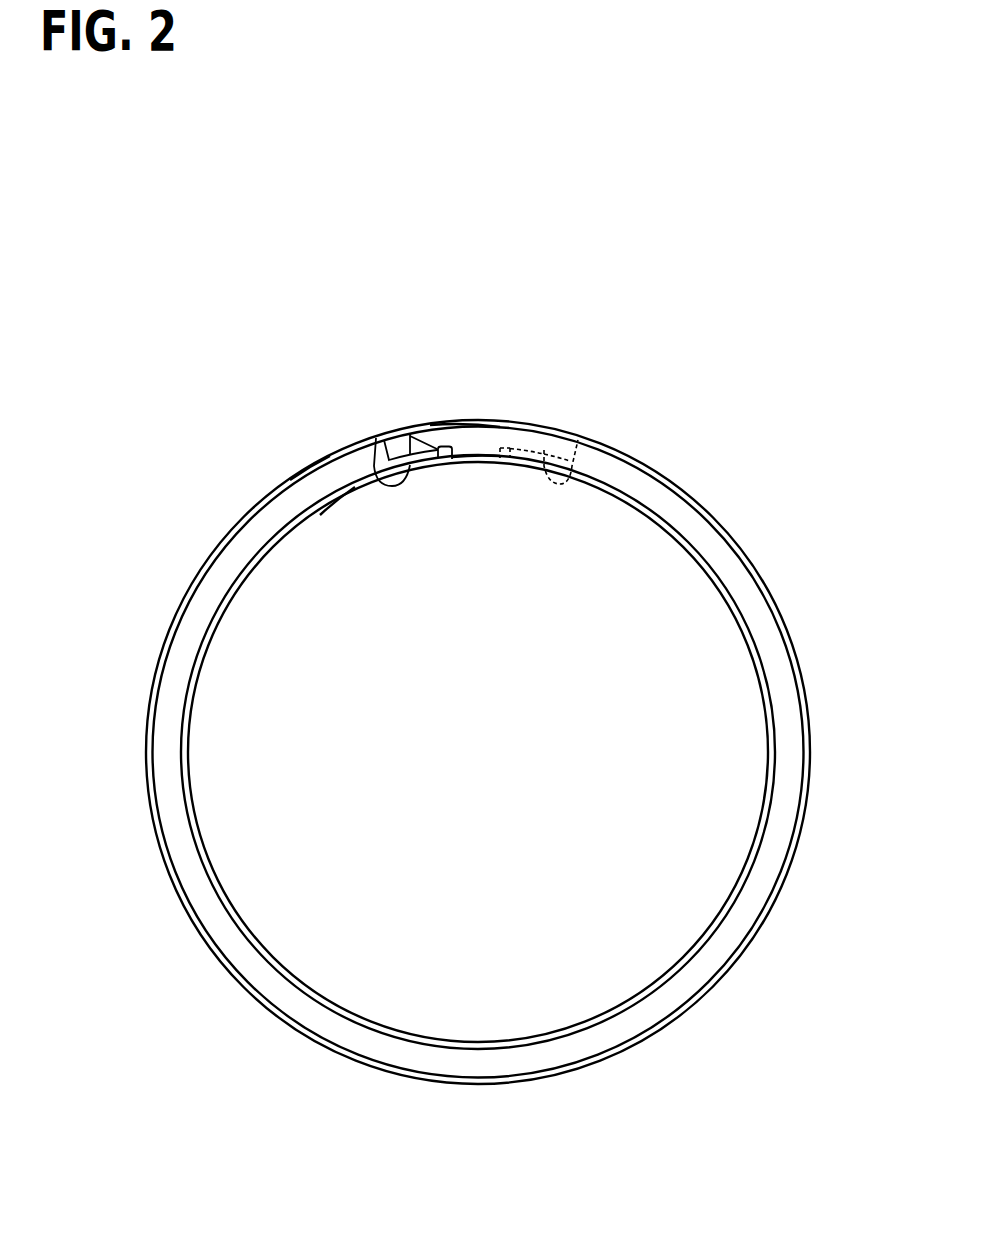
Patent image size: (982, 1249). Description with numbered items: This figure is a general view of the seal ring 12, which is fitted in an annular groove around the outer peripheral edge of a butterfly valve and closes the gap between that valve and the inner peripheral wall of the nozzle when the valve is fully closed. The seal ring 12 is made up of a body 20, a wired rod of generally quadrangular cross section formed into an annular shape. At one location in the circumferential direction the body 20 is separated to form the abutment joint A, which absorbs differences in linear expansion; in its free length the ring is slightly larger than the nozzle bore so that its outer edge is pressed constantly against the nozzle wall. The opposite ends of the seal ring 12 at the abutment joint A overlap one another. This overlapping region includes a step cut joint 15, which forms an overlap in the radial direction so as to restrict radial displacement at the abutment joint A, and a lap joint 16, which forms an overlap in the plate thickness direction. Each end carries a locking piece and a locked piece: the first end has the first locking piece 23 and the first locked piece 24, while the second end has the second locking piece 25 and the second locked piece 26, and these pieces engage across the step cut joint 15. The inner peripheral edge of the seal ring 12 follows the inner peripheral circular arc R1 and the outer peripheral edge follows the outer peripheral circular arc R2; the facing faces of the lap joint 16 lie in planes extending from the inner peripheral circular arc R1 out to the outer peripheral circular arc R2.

The seal ring 12 is at (787, 473).
The body 20 is at (660, 502).
The step cut joint 15 is at (447, 367).
The lap joint 16 is at (512, 478).
The first locking piece 23 is at (525, 447).
The first locked piece 24 is at (375, 478).
The second locking piece 25 is at (428, 442).
The second locked piece 26 is at (578, 440).
The abutment joint A is at (464, 386).
The inner peripheral circular arc R1 is at (337, 500).
The outer peripheral circular arc R2 is at (312, 468).